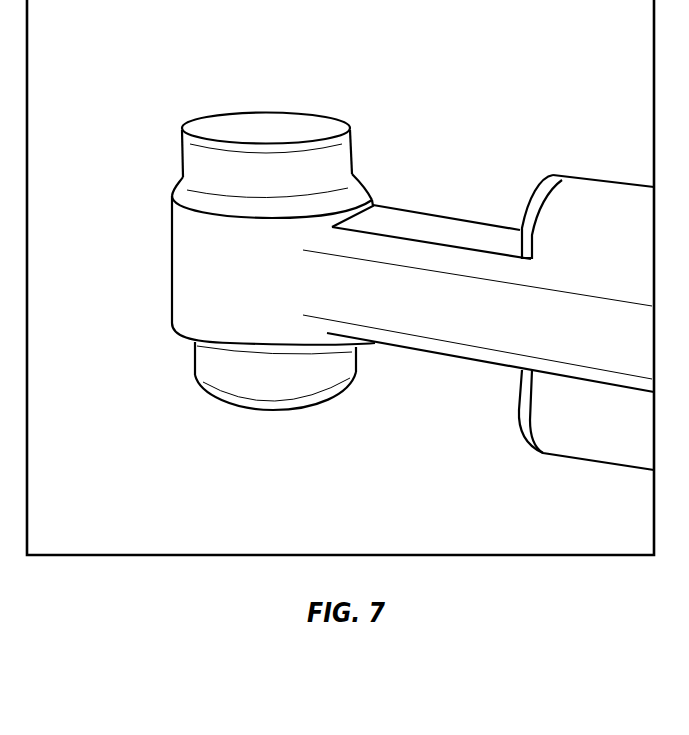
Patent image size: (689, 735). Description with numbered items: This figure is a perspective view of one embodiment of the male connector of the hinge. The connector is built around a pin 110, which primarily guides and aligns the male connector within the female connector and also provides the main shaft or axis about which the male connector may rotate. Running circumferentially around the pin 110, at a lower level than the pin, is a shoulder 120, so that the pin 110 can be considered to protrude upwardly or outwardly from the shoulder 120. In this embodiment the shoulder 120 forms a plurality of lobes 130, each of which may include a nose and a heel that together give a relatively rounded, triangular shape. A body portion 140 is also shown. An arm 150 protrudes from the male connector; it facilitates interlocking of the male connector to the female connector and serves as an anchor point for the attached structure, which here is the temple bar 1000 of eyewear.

The pin 110 is at (265, 134).
The shoulder 120 is at (358, 165).
The lobes 130 is at (364, 190).
The hub body 140 is at (168, 230).
The arm 150 is at (432, 307).
The temple bar 1000 is at (605, 157).